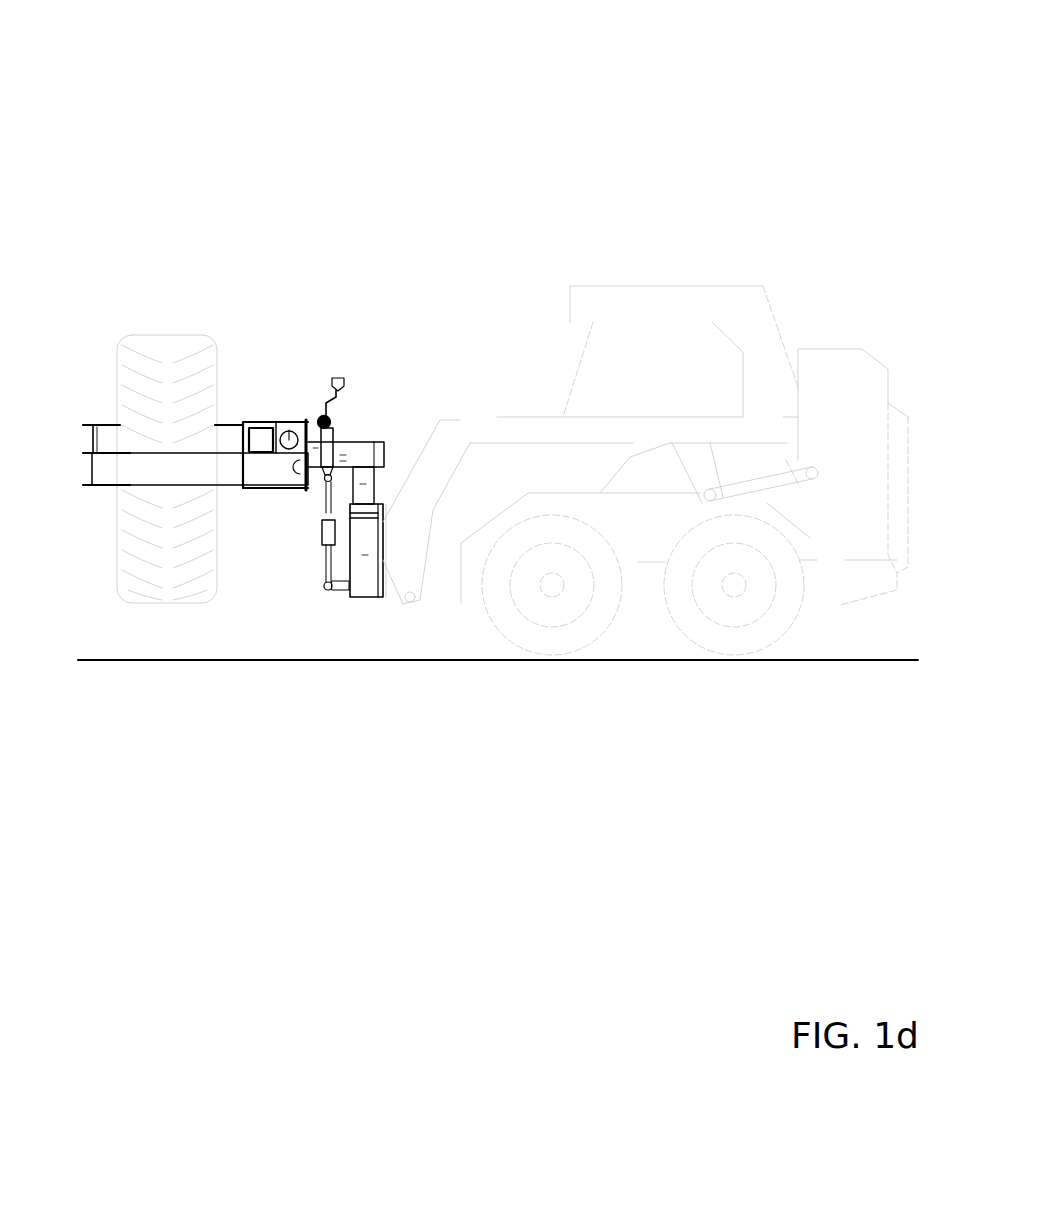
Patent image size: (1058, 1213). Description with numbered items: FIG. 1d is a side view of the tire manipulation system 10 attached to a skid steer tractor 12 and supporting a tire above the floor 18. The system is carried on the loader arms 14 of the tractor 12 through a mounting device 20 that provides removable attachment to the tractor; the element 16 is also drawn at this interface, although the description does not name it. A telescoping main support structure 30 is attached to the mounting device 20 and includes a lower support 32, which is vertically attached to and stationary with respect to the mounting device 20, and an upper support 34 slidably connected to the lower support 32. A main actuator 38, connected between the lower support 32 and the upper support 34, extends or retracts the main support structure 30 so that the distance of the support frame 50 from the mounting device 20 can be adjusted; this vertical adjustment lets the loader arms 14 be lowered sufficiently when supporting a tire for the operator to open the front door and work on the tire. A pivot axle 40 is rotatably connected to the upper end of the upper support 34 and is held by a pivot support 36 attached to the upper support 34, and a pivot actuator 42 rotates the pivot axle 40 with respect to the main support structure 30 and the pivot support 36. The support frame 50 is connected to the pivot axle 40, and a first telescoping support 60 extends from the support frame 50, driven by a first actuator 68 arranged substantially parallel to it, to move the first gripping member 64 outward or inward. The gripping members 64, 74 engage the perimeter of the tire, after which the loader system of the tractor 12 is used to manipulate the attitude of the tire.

The tire manipulation system 10 is at (258, 157).
The tractor 12 is at (647, 287).
The loader arms 14 is at (508, 418).
The mounting plate 16 is at (376, 590).
The floor 18 is at (645, 662).
The mounting device 20 is at (375, 577).
The main support structure 30 is at (347, 560).
The lower support 32 is at (360, 542).
The upper support 34 is at (375, 482).
The pivot support 36 is at (368, 440).
The main actuator 38 is at (323, 529).
The pivot axle 40 is at (320, 430).
The pivot actuator 42 is at (333, 422).
The support frame 50 is at (265, 423).
The first telescoping support 60 is at (242, 425).
The first gripping member 64 is at (96, 424).
The first actuator 68 is at (283, 422).
The second gripping member 74 is at (103, 484).